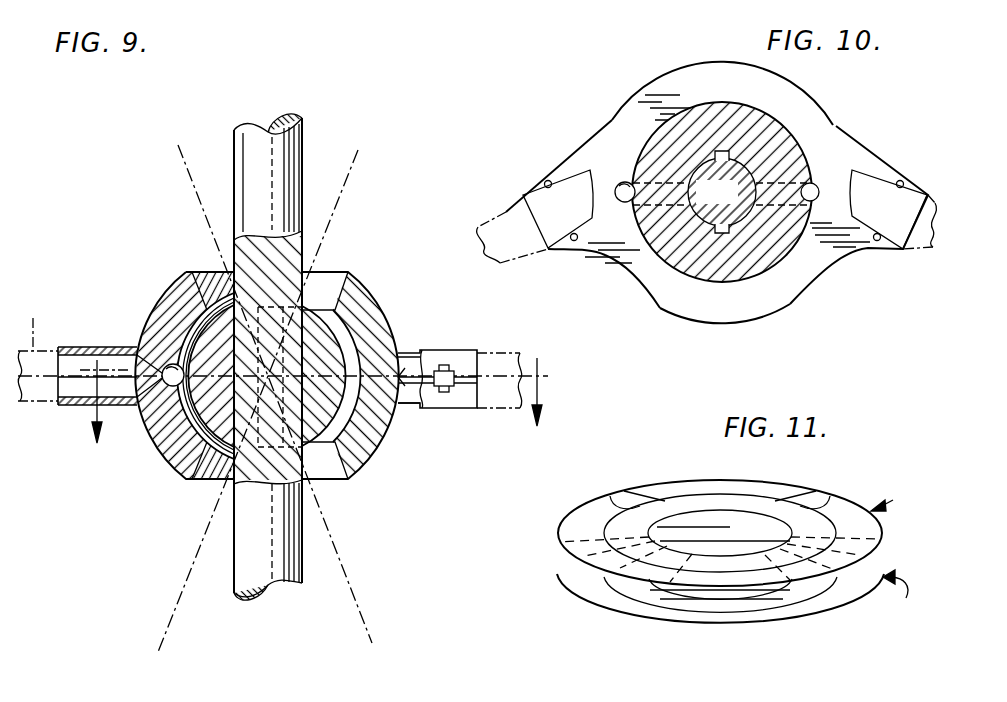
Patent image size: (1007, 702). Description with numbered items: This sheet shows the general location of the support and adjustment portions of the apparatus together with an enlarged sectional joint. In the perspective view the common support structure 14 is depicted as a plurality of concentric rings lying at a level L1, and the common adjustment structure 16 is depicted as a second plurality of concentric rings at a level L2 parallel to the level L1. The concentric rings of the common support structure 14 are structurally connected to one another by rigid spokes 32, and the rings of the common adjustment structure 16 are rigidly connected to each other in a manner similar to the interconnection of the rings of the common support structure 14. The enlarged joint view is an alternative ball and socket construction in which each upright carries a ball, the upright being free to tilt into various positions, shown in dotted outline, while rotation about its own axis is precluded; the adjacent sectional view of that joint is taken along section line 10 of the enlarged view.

In FIG. 9, the section line 10— 10 is at (315, 400).
In FIG. 11, the common support structure 14 is at (571, 525).
In FIG. 11, the common adjustment structure 16 is at (634, 620).
In FIG. 11, the rigid spokes 32 is at (627, 494).
In FIG. 11, the level L1 is at (892, 507).
In FIG. 11, the level L2 is at (901, 598).